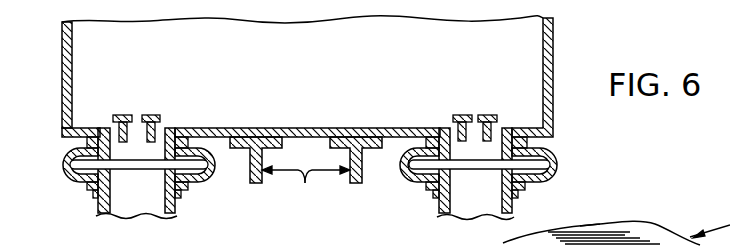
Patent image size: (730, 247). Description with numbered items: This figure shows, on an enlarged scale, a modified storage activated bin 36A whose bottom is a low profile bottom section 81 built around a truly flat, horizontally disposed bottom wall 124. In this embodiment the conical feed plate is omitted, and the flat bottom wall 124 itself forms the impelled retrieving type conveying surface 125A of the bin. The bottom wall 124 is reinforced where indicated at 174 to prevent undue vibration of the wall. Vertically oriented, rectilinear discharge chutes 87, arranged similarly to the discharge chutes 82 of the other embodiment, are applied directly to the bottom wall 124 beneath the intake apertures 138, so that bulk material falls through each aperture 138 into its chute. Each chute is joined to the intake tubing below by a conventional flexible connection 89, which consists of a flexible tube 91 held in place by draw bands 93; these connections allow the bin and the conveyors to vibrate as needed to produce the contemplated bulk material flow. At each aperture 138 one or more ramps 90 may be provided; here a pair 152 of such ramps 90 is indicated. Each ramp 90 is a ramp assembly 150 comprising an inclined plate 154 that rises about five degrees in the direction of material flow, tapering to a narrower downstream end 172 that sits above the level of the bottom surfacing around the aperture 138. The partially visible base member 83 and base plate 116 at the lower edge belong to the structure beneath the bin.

The activated bin 36A is at (332, 74).
The low profile bottom section 81 is at (58, 136).
The discharge chute 82 is at (317, 149).
The base member 83 is at (269, 242).
The discharge chute 87 is at (90, 200).
The flexible connection 89 is at (64, 163).
The ramp 90 is at (456, 112).
The flexible tube 91 is at (68, 178).
The draw band 93 is at (186, 188).
The base plate 116 is at (213, 242).
The bottom wall 124 is at (328, 128).
The conveying surface 125A is at (272, 128).
The intake aperture 138 is at (162, 125).
The ramp assembly 150 is at (310, 98).
The pair of ramps 152 is at (635, 246).
The inclined plate 154 is at (580, 246).
The downstream end 172 is at (612, 246).
The reinforcement 174 is at (306, 184).